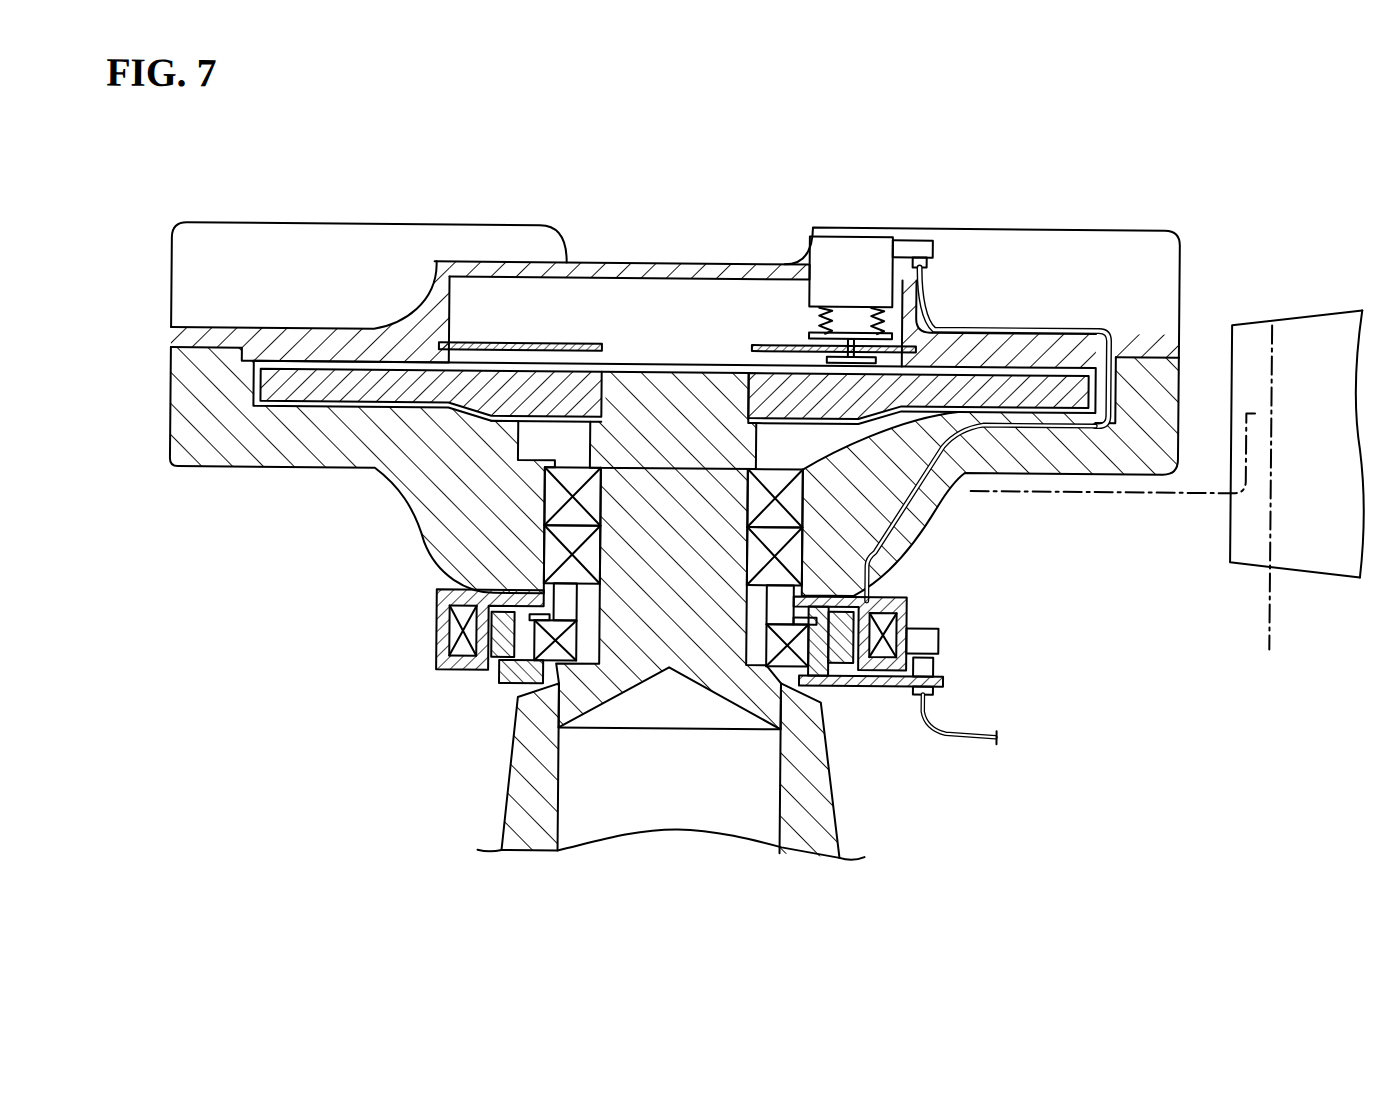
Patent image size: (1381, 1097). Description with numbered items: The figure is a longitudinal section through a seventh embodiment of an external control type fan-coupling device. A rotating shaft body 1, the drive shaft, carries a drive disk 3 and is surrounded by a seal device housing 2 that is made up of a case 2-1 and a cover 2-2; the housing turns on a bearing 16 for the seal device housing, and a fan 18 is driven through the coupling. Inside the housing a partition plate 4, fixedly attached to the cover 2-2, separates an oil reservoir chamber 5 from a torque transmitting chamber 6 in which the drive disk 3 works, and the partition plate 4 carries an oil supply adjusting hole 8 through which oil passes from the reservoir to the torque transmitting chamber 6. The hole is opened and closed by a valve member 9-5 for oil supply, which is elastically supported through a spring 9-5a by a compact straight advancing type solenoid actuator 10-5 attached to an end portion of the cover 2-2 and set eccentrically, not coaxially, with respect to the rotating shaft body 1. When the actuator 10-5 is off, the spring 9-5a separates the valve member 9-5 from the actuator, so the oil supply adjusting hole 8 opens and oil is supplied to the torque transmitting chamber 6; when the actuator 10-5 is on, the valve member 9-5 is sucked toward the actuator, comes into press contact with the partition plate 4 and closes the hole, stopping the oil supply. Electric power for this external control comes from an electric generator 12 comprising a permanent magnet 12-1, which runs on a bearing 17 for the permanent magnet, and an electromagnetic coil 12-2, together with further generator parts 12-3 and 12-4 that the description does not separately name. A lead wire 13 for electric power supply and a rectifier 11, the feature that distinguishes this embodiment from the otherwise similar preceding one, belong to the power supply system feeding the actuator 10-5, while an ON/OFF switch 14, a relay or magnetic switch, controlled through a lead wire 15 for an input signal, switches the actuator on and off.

The rotating shaft body 1 is at (827, 811).
The seal device housing 2 is at (1073, 192).
The case 2-1 is at (250, 457).
The cover 2-2 is at (192, 340).
The drive disk 3 is at (378, 380).
The partition plate 4 is at (593, 340).
The oil reservoir chamber 5 is at (523, 305).
The torque transmitting chamber 6 is at (557, 495).
The oil supply adjusting hole 8 is at (871, 345).
The valve member for oil supply 9-5 is at (800, 357).
The spring 9-5a is at (820, 315).
The actuator of the straight advancing type solenoid type 10-5 is at (840, 255).
The rectifier 11 is at (920, 233).
The electric generator 12 is at (945, 598).
The permanent magnet 12-1 is at (500, 657).
The electromagnetic coil 12-2 is at (460, 643).
The brake friction plate 12-3 is at (527, 672).
The brake bracket 12-4 is at (440, 627).
The lead wire for electric power supply 13 is at (935, 318).
The ON/OFF switch 14 is at (938, 633).
The lead wire for an input signal 15 is at (978, 733).
The bearing for the seal device housing 16 is at (513, 587).
The bearing for the permanent magnet 17 is at (784, 658).
The fan 18 is at (1167, 495).